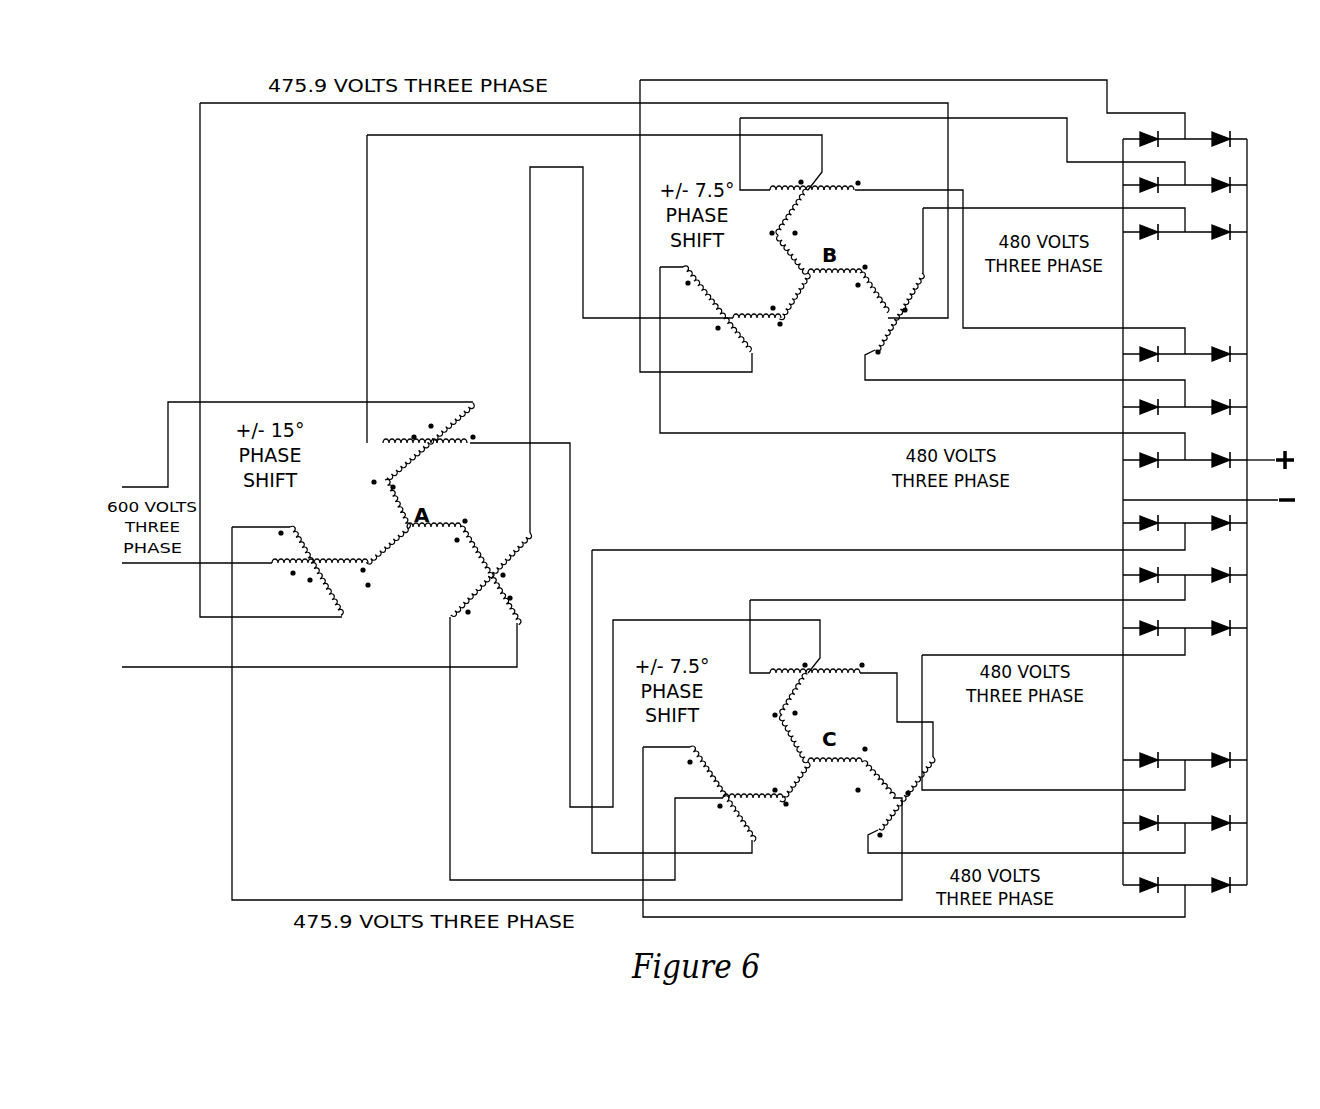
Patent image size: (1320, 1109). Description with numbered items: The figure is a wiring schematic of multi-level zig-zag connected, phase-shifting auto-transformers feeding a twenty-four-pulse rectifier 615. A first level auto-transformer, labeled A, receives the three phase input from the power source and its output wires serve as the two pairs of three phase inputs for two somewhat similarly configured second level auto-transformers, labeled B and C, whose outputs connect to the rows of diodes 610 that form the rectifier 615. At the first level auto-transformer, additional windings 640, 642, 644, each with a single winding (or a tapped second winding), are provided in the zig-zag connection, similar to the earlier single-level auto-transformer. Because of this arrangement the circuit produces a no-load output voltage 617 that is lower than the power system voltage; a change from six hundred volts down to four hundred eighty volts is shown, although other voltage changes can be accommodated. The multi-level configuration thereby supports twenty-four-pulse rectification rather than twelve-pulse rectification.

The diode 610 is at (1150, 113).
The twenty-four-pulse rectifier 615 is at (1222, 128).
The no-load output voltage 617 is at (1276, 438).
The additional winding 640 is at (437, 414).
The additional winding 642 is at (513, 619).
The additional winding 644 is at (278, 566).